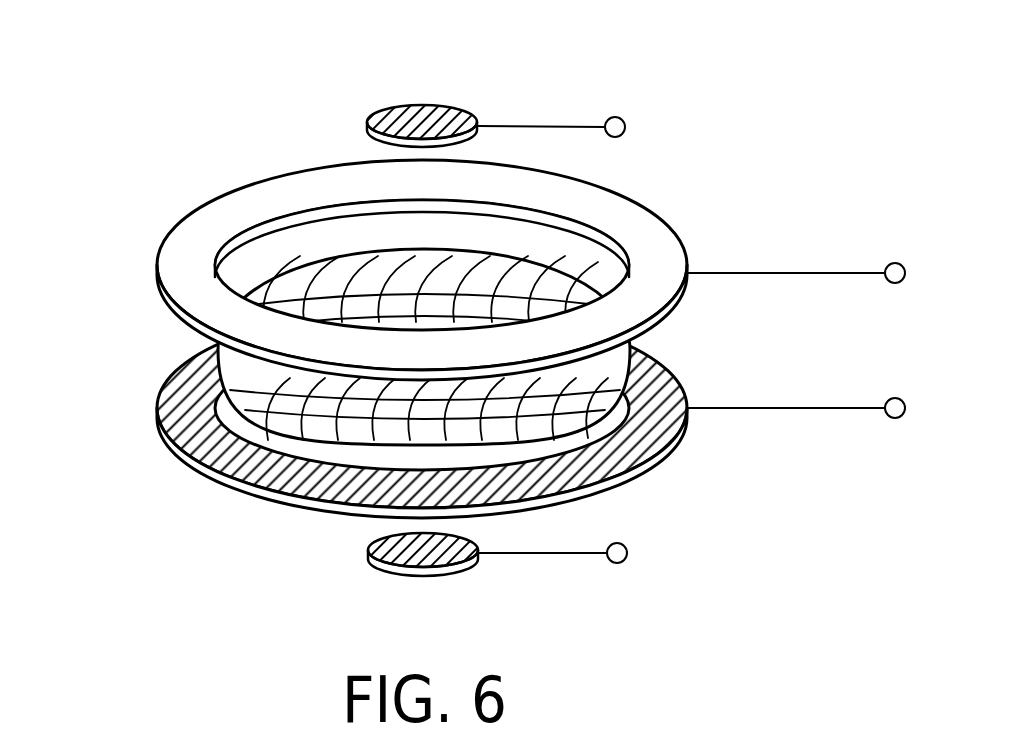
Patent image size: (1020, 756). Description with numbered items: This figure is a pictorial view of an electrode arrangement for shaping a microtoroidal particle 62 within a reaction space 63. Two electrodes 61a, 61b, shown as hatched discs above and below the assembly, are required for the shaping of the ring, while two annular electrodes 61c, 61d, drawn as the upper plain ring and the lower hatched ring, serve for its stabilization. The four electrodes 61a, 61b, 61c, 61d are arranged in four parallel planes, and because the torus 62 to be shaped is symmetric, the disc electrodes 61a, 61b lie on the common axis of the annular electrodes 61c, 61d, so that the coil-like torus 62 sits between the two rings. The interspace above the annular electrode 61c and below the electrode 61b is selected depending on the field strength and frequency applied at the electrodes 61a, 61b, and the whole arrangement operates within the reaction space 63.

The electrode 61a is at (418, 102).
The electrode 61b is at (413, 570).
The annular electrode 61c is at (650, 233).
The annular electrode 61d is at (667, 382).
The microtoroidal particle 62 is at (308, 397).
The reaction space 63 is at (190, 330).